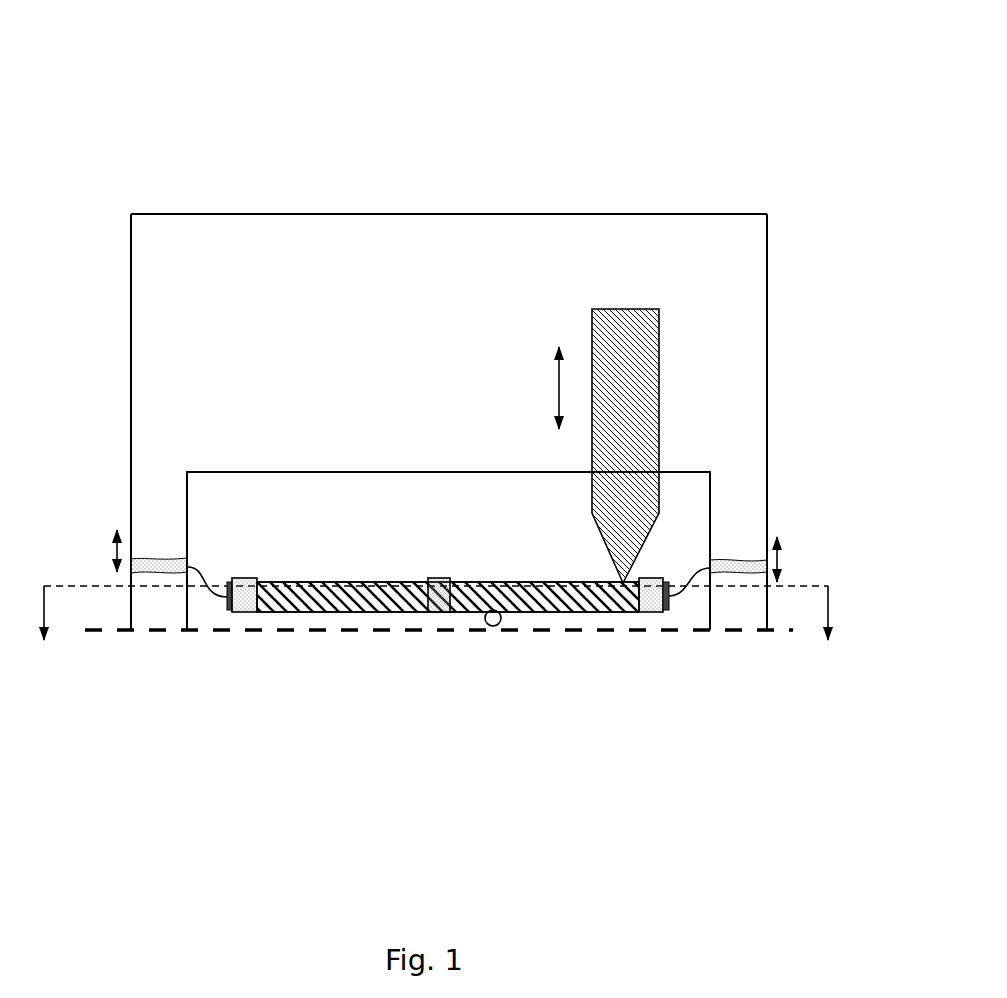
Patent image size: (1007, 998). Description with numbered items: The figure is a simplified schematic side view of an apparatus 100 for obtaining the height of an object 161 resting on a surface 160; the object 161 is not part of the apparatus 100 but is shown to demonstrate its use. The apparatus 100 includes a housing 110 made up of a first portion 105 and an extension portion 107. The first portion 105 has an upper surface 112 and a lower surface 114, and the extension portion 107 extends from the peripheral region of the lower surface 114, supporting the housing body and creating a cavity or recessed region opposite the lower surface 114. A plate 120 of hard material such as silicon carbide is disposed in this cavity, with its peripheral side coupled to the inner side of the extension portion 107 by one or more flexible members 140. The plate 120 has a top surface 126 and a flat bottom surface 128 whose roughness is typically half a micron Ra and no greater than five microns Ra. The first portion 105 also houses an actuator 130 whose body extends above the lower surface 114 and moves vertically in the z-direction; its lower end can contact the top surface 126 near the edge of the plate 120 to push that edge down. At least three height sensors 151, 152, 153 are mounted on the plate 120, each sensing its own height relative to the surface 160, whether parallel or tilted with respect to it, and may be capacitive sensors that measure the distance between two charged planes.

The apparatus 100 is at (242, 107).
The first portion 105 is at (198, 298).
The extension portion 107 is at (152, 493).
The housing 110 is at (768, 300).
The upper surface 112 is at (513, 212).
The lower surface 114 is at (382, 470).
The plate 120 is at (377, 590).
The top surface 126 is at (292, 582).
The flat bottom surface 128 is at (333, 612).
The actuator 130 is at (615, 313).
The flexible members 140 is at (205, 565).
The height sensor 151 is at (240, 606).
The height sensor 152 is at (443, 582).
The height sensor 153 is at (655, 600).
The surface 160 is at (553, 632).
The object 161 is at (492, 632).